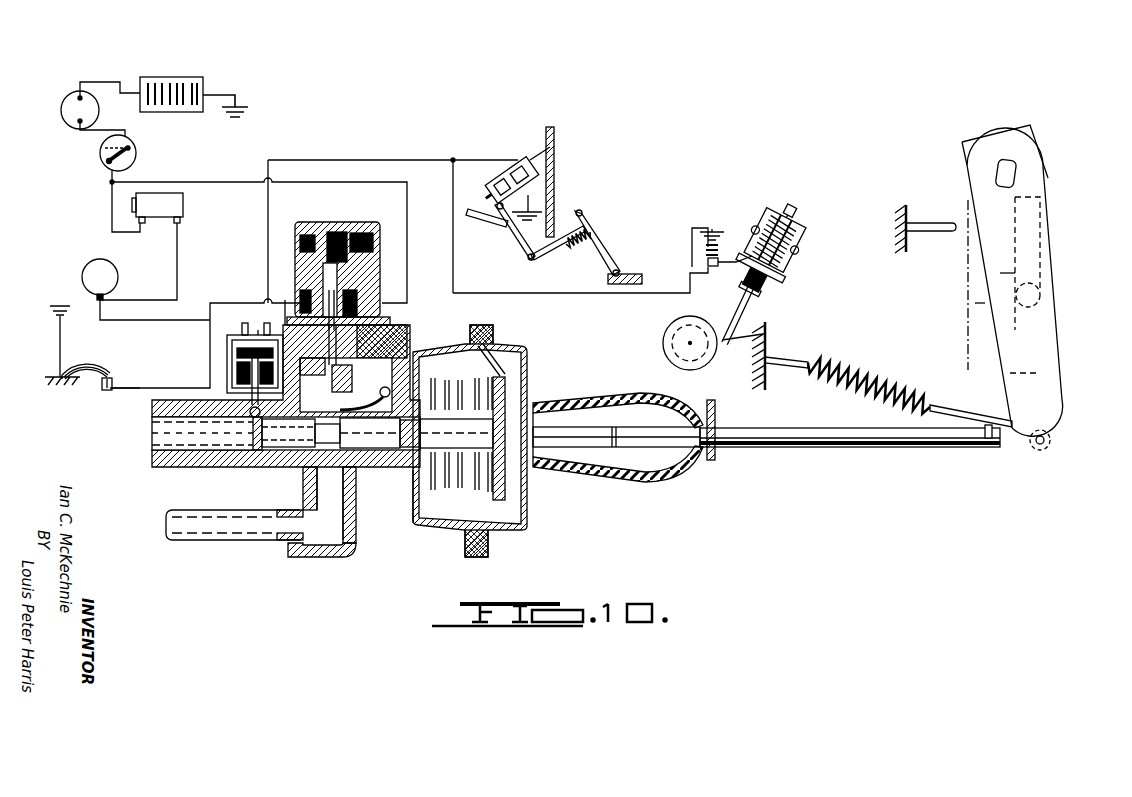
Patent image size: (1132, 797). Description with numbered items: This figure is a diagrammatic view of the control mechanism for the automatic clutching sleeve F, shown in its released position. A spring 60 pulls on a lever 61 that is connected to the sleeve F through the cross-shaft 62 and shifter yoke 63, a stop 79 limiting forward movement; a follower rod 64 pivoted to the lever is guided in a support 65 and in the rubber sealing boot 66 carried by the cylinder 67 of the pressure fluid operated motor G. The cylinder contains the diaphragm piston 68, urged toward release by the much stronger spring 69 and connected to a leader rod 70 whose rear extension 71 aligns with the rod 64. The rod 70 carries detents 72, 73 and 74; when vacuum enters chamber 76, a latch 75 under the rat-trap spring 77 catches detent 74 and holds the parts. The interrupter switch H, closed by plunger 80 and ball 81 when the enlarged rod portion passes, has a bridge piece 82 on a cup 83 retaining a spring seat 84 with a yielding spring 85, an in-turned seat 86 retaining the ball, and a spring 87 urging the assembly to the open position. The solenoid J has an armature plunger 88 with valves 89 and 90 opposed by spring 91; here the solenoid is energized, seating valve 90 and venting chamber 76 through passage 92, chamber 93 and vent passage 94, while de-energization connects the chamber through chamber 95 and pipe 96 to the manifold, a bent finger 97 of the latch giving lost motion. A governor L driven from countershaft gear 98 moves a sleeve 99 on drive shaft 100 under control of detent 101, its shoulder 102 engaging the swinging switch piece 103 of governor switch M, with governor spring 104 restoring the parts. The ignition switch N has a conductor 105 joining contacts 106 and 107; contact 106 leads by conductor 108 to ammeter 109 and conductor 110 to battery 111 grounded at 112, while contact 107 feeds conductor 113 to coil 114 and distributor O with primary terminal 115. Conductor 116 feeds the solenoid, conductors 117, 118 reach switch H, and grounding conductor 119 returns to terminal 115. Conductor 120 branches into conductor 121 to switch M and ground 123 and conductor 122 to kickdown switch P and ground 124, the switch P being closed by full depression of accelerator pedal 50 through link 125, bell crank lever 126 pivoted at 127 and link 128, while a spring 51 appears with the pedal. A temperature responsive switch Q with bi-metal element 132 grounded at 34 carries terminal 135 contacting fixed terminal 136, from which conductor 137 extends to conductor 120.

The ground connection 34 is at (55, 322).
The accelerator pedal 50 is at (606, 262).
The return spring 51 is at (594, 238).
The spring 60 is at (875, 368).
The lever 61 is at (1068, 418).
The cross-shaft 62 is at (997, 170).
The shifter yoke 63 is at (1000, 273).
The follower rod 64 is at (850, 447).
The support 65 is at (716, 420).
The rubber sealing boot 66 is at (650, 398).
The cylinder 67 is at (490, 540).
The diaphragm piston 68 is at (503, 365).
The spring 69 is at (452, 528).
The leader rod 70 is at (358, 462).
The rear extension 71 is at (578, 470).
The detent 72 is at (250, 467).
The detent 73 is at (327, 468).
The detent 74 is at (412, 497).
The latch 75 is at (416, 432).
The chamber 76 is at (455, 513).
The rat-trap spring 77 is at (402, 352).
The stop 79 is at (945, 225).
The plunger 80 is at (247, 422).
The ball 81 is at (242, 436).
The conductor bridge piece 82 is at (232, 350).
The cup 83 is at (232, 360).
The spring seat 84 is at (232, 380).
The spring 85 is at (232, 370).
The in-turned seat 86 is at (202, 444).
The spring 87 is at (255, 328).
The armature plunger 88 is at (382, 257).
The valve 89 is at (382, 283).
The valve 90 is at (390, 338).
The spring 91 is at (333, 230).
The passage 92 is at (392, 350).
The chamber 93 is at (385, 330).
The vent passage 94 is at (303, 328).
The chamber 95 is at (320, 447).
The pipe 96 is at (195, 540).
The inwardly bent finger 97 is at (288, 431).
The countershaft gear 98 is at (668, 336).
The sleeve 99 is at (763, 298).
The drive shaft 100 is at (768, 330).
The detent 101 is at (760, 305).
The shoulder 102 is at (773, 287).
The swinging switch piece 103 is at (735, 250).
The governor spring 104 is at (790, 225).
The conductor 105 is at (131, 150).
The contact 106 is at (130, 146).
The contact 107 is at (110, 160).
The conductor 108 is at (107, 121).
The ammeter 109 is at (62, 112).
The conductor 110 is at (108, 80).
The storage battery 111 is at (190, 78).
The ground 112 is at (236, 118).
The conductor 113 is at (110, 203).
The coil 114 is at (183, 203).
The primary terminal 115 is at (92, 296).
The conductor 116 is at (178, 182).
The conductor 117 is at (285, 300).
The conductor 118 is at (258, 330).
The grounding conductor 119 is at (135, 322).
The conductor 120 is at (268, 237).
The conductor 121 is at (578, 293).
The conductor 122 is at (502, 141).
The ground 123 is at (712, 230).
The ground 124 is at (548, 192).
The link 125 is at (537, 255).
The bell crank lever 126 is at (505, 226).
The pivot 127 is at (510, 238).
The link 128 is at (502, 257).
The bi-metal conductor element 132 is at (92, 364).
The terminal 135 is at (120, 366).
The fixed terminal 136 is at (107, 388).
The conductor 137 is at (133, 393).
The sleeve F is at (975, 303).
The pressure fluid operated motor G is at (493, 340).
The interrupter switch H is at (227, 340).
The solenoid J is at (382, 230).
The governor L is at (803, 245).
The governor switch M is at (730, 280).
The ignition switch N is at (100, 153).
The distributor O is at (82, 277).
The kickdown switch P is at (515, 165).
The temperature responsive switch Q is at (103, 374).